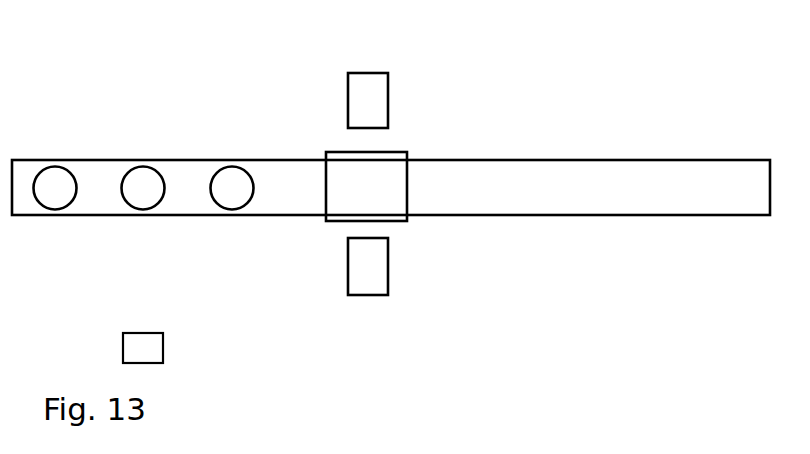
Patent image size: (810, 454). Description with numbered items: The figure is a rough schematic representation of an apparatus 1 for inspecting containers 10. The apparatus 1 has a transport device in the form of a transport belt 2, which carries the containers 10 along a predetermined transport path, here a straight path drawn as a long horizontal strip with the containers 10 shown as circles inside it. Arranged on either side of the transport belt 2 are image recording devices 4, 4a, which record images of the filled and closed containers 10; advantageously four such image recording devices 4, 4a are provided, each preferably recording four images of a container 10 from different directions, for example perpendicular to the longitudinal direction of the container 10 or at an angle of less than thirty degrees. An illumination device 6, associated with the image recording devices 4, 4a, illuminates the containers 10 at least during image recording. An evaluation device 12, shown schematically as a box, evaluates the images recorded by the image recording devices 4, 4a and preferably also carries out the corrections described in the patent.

The apparatus 1 is at (485, 252).
The transport belt 2 is at (575, 203).
The image recording device 4 is at (374, 95).
The image recording device 4a is at (374, 272).
The illumination device 6 is at (408, 158).
The containers 10 is at (235, 192).
The evaluation device 12 is at (143, 348).